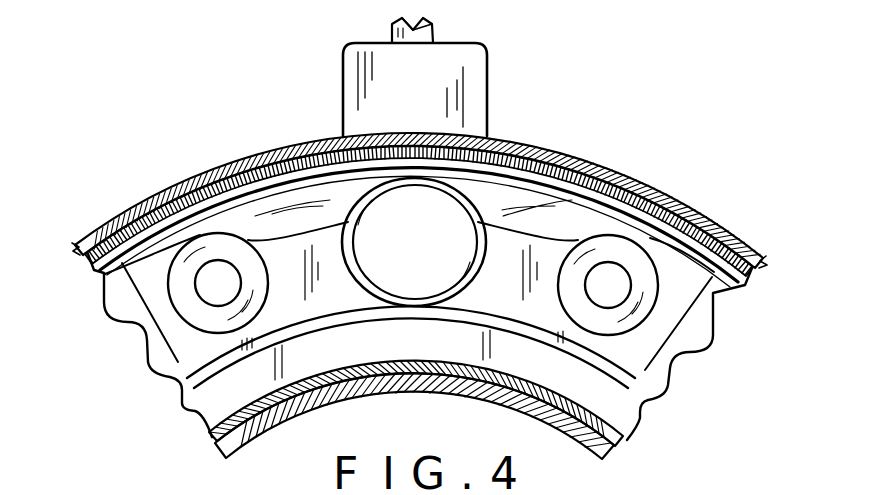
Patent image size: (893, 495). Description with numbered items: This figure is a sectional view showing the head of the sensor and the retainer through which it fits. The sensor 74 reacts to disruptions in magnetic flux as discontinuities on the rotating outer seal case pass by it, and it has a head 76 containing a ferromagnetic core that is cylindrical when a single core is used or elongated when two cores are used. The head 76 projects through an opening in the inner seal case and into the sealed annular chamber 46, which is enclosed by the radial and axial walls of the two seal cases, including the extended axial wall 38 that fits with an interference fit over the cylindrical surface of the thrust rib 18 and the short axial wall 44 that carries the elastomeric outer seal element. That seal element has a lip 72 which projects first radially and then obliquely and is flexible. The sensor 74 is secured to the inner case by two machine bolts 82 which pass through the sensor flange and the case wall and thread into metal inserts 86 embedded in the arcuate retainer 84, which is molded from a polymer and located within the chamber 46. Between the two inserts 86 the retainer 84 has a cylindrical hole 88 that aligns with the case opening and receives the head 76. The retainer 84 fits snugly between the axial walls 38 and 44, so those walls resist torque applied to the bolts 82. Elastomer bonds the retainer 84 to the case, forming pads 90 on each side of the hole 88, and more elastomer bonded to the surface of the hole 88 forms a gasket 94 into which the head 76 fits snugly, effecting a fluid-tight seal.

The thrust rib 18 is at (298, 426).
The extended axial wall 38 is at (265, 413).
The short axial wall 44 is at (608, 178).
The annular chamber 46 is at (667, 357).
The lip 72 is at (663, 200).
The sensor 74 is at (392, 110).
The head 76 is at (530, 180).
The machine bolts 82 is at (188, 318).
The arcuate retainer 84 is at (190, 343).
The inserts 86 is at (215, 283).
The cylindrical hole 88 is at (357, 290).
The pads 90 is at (427, 33).
The gasket 94 is at (457, 242).